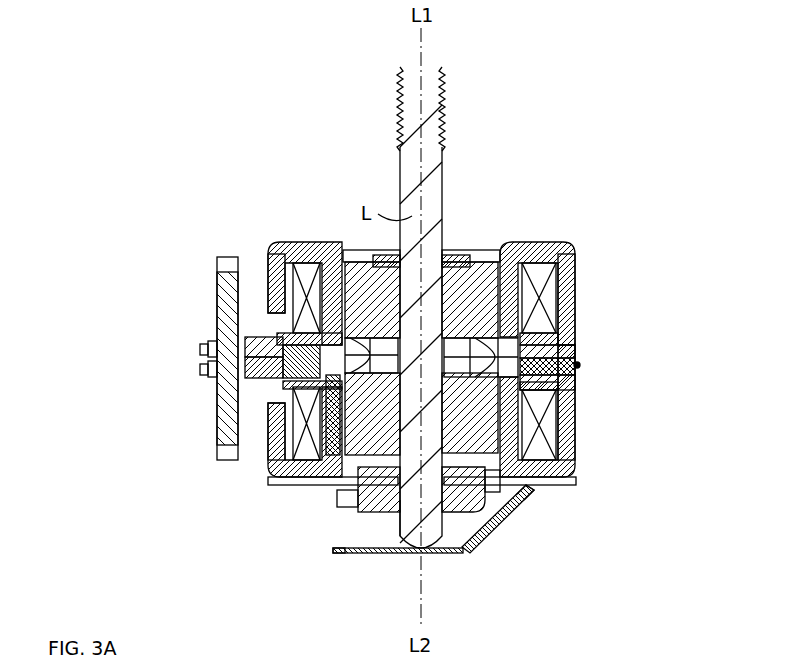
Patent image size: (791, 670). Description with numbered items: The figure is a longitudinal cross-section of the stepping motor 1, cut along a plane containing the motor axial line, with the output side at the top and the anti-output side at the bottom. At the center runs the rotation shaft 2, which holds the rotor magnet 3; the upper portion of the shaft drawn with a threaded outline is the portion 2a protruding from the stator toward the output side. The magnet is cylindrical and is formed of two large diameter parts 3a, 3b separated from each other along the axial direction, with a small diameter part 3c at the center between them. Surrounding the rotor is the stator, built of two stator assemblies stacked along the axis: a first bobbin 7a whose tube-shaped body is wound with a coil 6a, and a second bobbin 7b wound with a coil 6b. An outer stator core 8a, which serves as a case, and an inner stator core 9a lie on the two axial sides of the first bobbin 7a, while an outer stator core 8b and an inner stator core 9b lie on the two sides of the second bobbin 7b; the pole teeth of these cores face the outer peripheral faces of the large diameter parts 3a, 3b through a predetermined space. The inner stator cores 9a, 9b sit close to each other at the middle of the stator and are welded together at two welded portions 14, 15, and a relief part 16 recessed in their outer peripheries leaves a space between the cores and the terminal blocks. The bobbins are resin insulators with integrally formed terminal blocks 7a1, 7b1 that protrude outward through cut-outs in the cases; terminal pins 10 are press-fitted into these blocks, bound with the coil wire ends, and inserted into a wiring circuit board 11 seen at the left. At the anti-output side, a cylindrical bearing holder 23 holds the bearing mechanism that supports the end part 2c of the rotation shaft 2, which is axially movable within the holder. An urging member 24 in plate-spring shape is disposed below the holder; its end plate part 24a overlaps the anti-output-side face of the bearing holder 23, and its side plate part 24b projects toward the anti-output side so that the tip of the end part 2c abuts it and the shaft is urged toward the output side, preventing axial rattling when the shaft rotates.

The stepping motor 1 is at (168, 211).
The rotation shaft 2 is at (443, 183).
The threaded portion of shaft 2a is at (446, 82).
The end part on the anti-output side of the rotation shaft 2c is at (402, 518).
The rotor magnet 3 is at (471, 265).
The large diameter part 3a is at (566, 292).
The large diameter part 3b is at (572, 410).
The small diameter part 3c is at (572, 322).
The coil 6a is at (579, 250).
The coil 6b is at (578, 456).
The first bobbin 7a is at (306, 257).
The terminal block 7a1 is at (254, 340).
The second bobbin 7b is at (308, 463).
The terminal block 7b1 is at (252, 395).
The outer stator core 8a is at (298, 240).
The outer stator core 8b is at (287, 480).
The inner stator core 9a is at (580, 347).
The inner stator core 9b is at (578, 380).
The terminal pins 10 is at (200, 350).
The wiring circuit board 11 is at (218, 438).
The welded portion 14 is at (263, 387).
The welded portion 15 is at (585, 366).
The relief part 16 is at (278, 345).
The bearing holder 23 is at (486, 518).
The urging member 24 is at (378, 553).
The end plate part 24a is at (503, 492).
The side plate part 24b is at (337, 549).